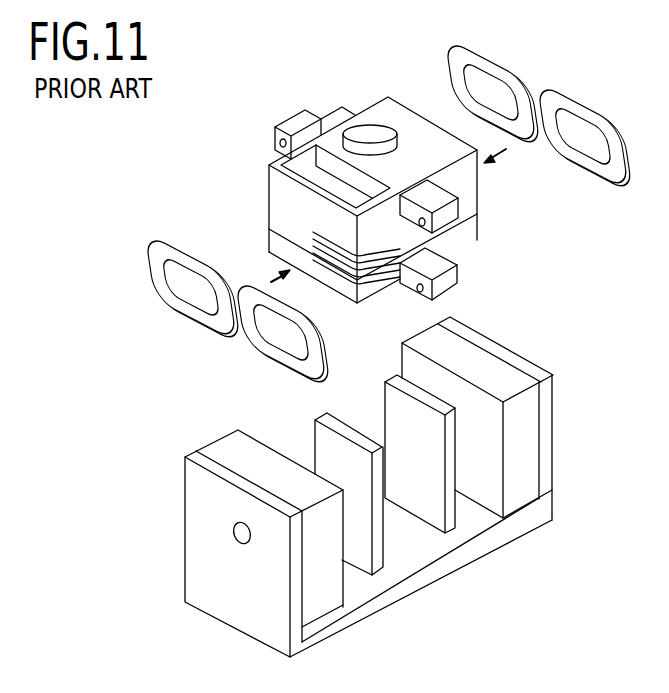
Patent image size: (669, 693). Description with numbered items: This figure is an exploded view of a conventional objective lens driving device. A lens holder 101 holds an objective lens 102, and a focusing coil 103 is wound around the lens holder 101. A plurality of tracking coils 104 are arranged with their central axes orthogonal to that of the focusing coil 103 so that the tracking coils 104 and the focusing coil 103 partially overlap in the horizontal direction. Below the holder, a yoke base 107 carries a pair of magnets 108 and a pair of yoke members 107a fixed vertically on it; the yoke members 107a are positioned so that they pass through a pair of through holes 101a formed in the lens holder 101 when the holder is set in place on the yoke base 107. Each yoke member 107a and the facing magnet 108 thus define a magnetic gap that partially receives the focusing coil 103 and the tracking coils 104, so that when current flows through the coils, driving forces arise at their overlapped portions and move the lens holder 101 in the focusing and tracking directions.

The lens holder 101 is at (300, 127).
The through holes 101a is at (325, 172).
The objective lens 102 is at (371, 133).
The focusing coil 103 is at (362, 262).
The tracking coils 104 is at (537, 66).
The yoke base 107 is at (443, 578).
The yoke members 107a is at (458, 513).
The magnets 108 is at (222, 445).